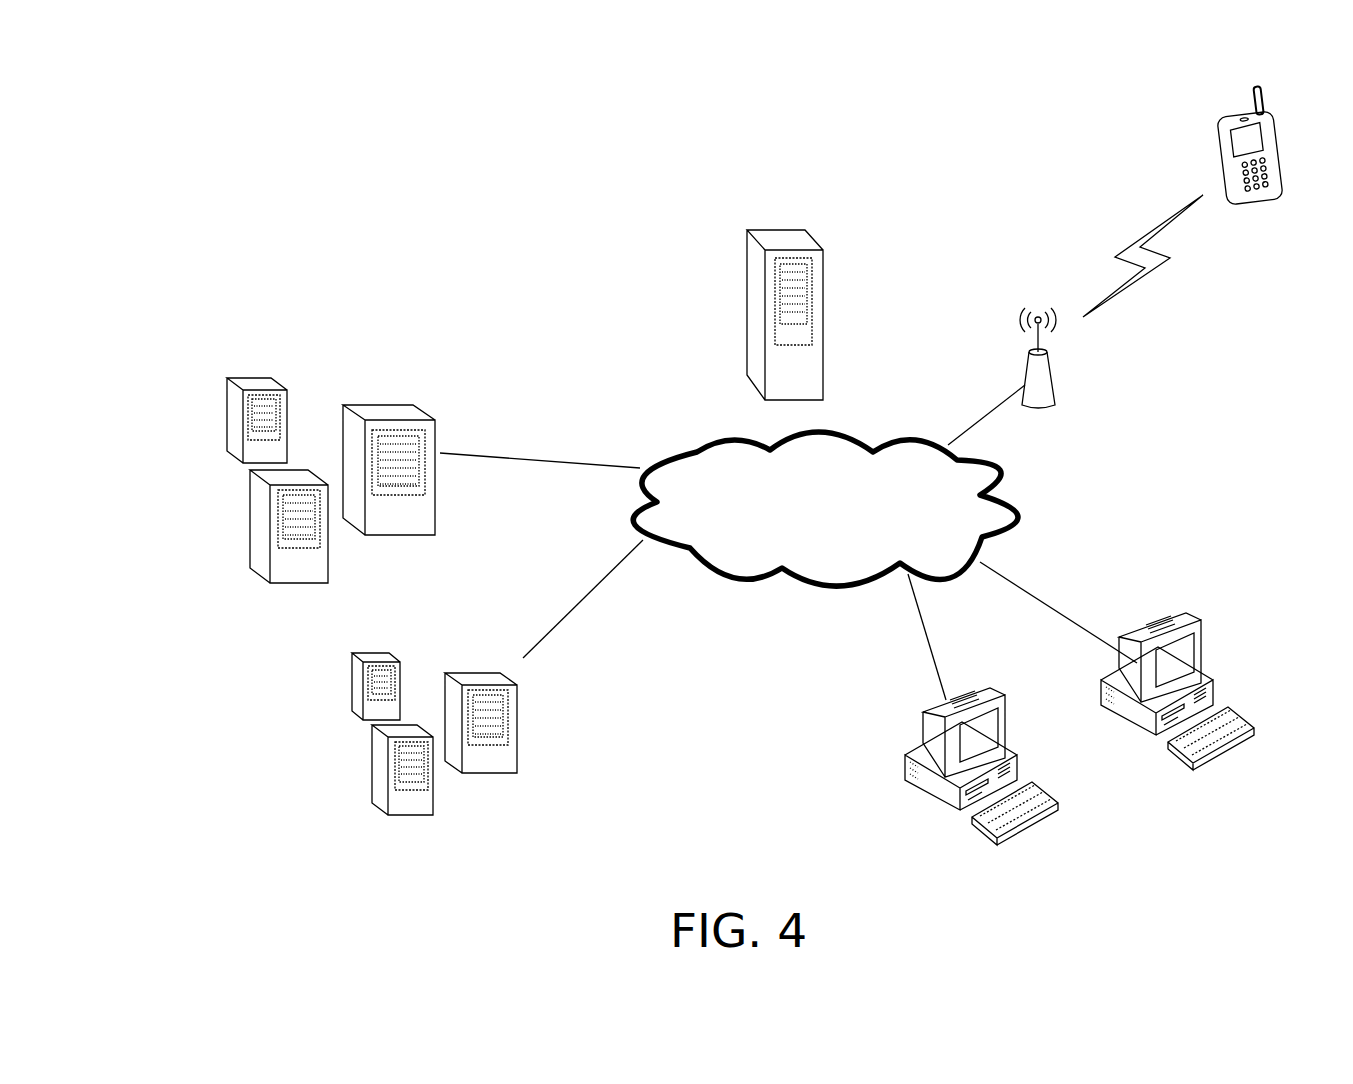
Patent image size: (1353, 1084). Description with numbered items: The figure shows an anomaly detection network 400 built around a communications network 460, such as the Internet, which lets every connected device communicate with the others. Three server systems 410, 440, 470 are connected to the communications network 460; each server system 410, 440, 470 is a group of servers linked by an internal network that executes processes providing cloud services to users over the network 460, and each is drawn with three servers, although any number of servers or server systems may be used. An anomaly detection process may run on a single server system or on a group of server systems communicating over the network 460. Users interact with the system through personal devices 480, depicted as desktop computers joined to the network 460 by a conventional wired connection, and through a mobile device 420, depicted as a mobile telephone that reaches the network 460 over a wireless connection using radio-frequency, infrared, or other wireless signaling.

The network 400 is at (653, 249).
The server system 410 is at (784, 242).
The mobile device 420 is at (1233, 122).
The server system 440 is at (430, 397).
The communications network 460 is at (785, 577).
The server system 470 is at (260, 715).
The personal devices 480 is at (1052, 812).